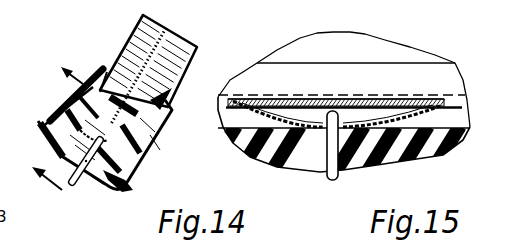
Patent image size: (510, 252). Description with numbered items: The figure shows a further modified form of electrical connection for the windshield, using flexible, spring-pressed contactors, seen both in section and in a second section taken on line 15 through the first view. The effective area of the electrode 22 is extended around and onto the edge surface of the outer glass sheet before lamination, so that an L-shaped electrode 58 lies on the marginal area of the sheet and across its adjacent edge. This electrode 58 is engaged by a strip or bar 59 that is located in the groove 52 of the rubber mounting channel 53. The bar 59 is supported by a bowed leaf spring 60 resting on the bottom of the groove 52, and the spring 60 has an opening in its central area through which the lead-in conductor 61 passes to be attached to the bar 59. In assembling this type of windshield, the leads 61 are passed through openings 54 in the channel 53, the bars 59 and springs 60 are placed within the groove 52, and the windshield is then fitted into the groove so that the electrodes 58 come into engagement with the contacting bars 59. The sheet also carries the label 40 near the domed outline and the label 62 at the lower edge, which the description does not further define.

In FIG. 14, the section line 15 is at (87, 64).
In FIG. 14, the electrode 22 is at (78, 88).
In FIG. 15, the electrode 22 is at (427, 87).
In FIG. 14, the dome housing 40 is at (148, 62).
In FIG. 15, the dome housing 40 is at (388, 51).
In FIG. 14, the groove 52 is at (50, 117).
In FIG. 15, the groove 52 is at (447, 148).
In FIG. 14, the rubber mounting channel 53 is at (70, 150).
In FIG. 15, the rubber mounting channel 53 is at (390, 150).
In FIG. 14, the openings 54 is at (103, 186).
In FIG. 14, the L-shaped electrode 58 is at (70, 103).
In FIG. 15, the L-shaped electrode 58 is at (295, 93).
In FIG. 14, the strip or bar 59 is at (140, 143).
In FIG. 15, the strip or bar 59 is at (272, 100).
In FIG. 14, the bowed leaf spring 60 is at (133, 160).
In FIG. 15, the bowed leaf spring 60 is at (268, 144).
In FIG. 14, the lead-in conductor 61 is at (78, 186).
In FIG. 15, the lead-in conductor 61 is at (328, 175).
In FIG. 14, the element 62 is at (122, 246).